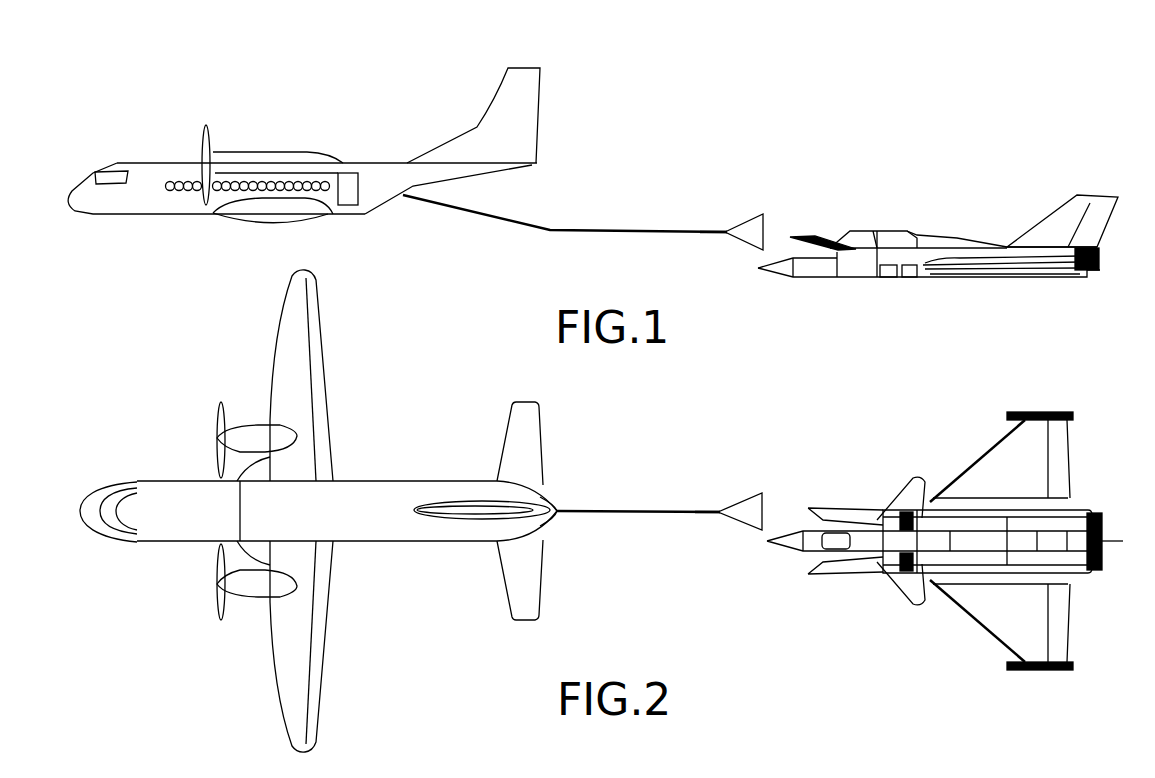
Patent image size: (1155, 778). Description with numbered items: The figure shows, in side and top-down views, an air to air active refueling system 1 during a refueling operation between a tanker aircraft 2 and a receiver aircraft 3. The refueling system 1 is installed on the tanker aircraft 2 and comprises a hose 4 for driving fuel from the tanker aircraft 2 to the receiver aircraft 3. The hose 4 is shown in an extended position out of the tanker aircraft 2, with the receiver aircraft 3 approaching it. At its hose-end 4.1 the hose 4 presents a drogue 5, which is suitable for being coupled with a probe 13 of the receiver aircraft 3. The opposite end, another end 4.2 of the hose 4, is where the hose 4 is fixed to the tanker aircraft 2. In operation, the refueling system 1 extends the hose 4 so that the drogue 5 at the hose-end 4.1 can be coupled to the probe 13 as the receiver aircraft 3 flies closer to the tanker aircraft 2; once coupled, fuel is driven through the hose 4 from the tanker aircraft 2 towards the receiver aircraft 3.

In FIG. 1, the air to air active refueling system 1 is at (568, 184).
In FIG. 2, the air to air active refueling system 1 is at (675, 424).
In FIG. 1, the tanker aircraft 2 is at (110, 100).
In FIG. 2, the tanker aircraft 2 is at (126, 412).
In FIG. 1, the receiver aircraft 3 is at (990, 180).
In FIG. 2, the receiver aircraft 3 is at (955, 400).
In FIG. 1, the hose 4 is at (550, 232).
In FIG. 2, the hose 4 is at (658, 513).
In FIG. 1, the hose-end 4.1 is at (722, 231).
In FIG. 2, the hose-end 4.1 is at (720, 510).
In FIG. 1, the another end 4.2 is at (413, 185).
In FIG. 2, the another end 4.2 is at (563, 513).
In FIG. 1, the drogue 5 is at (755, 250).
In FIG. 2, the drogue 5 is at (752, 530).
In FIG. 1, the probe 13 is at (812, 237).
In FIG. 2, the probe 13 is at (812, 506).